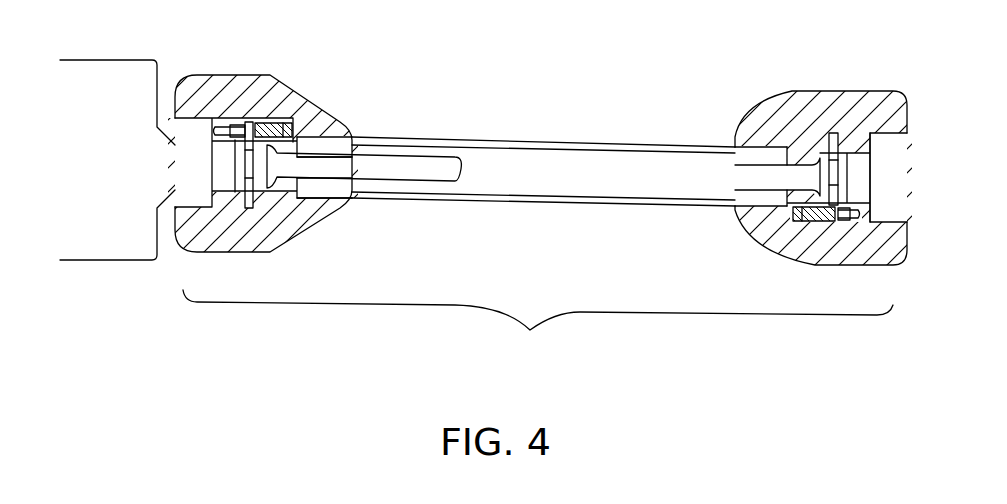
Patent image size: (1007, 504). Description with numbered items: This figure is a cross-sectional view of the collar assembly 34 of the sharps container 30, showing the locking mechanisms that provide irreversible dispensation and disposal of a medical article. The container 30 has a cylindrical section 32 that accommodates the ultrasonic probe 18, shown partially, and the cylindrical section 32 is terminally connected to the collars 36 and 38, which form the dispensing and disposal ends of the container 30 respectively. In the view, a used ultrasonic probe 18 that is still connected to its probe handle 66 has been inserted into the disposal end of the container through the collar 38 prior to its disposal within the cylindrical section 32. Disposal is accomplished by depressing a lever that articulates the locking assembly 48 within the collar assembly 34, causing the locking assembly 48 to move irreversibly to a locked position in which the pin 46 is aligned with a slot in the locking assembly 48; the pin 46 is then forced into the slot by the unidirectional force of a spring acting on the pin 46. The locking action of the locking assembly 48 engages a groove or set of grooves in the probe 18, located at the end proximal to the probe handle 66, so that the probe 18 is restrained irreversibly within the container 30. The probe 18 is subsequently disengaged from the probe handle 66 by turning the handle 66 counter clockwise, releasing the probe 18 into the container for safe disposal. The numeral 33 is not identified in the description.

The ultrasonic probe 18 is at (391, 150).
The sharps container 30 is at (538, 326).
The cylindrical section 32 is at (567, 140).
The swaged tube end 33 is at (317, 120).
The collar assembly 34 is at (240, 75).
The collar 36 is at (907, 150).
The collar 38 is at (158, 123).
The pin 46 is at (272, 122).
The locking assembly 48 is at (249, 210).
The probe handle 66 is at (104, 248).